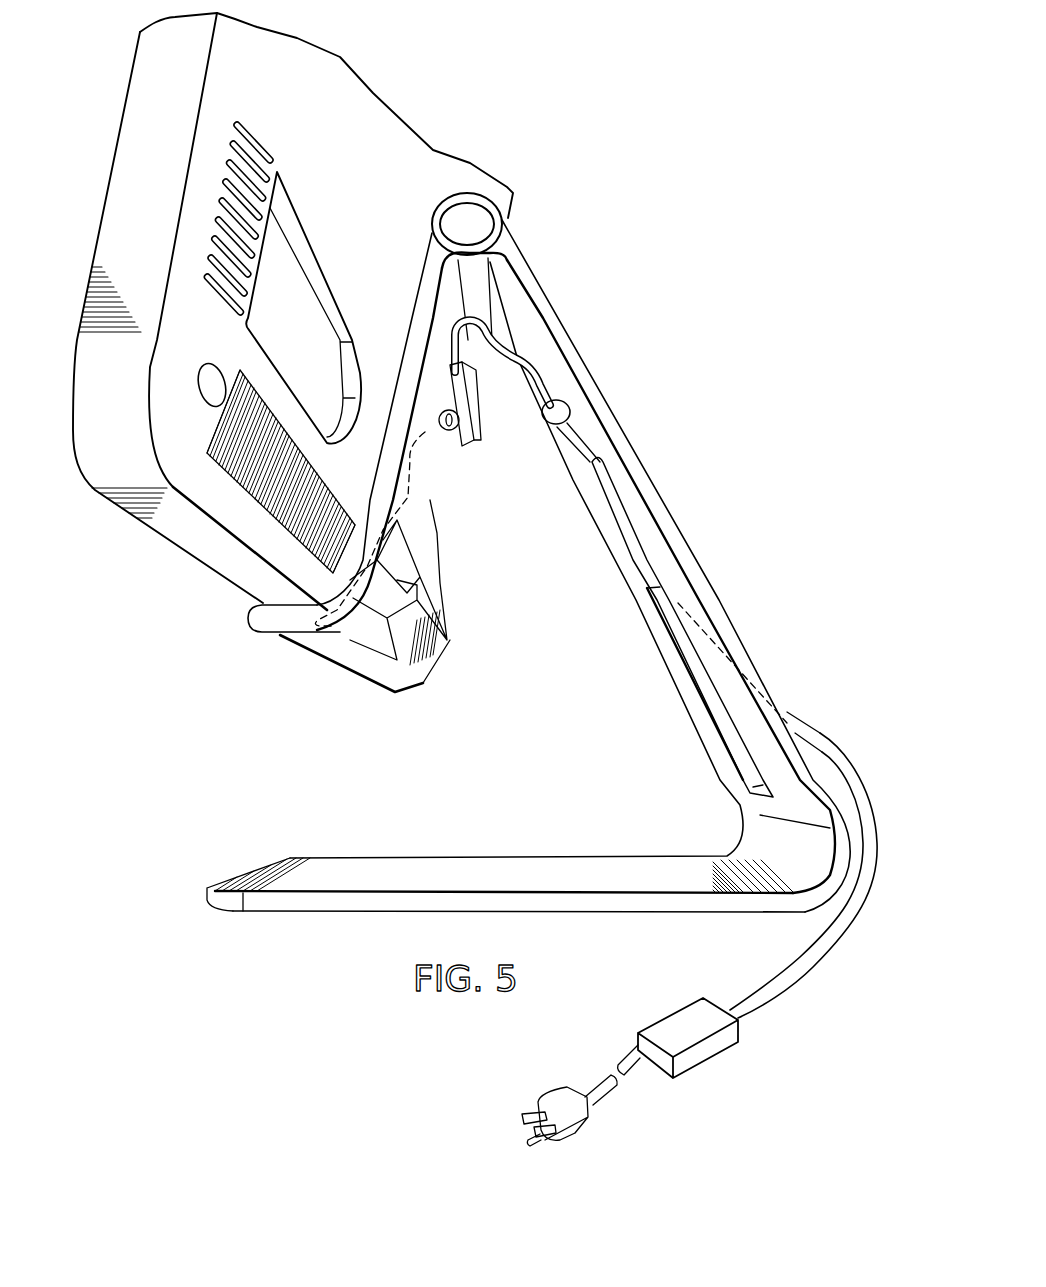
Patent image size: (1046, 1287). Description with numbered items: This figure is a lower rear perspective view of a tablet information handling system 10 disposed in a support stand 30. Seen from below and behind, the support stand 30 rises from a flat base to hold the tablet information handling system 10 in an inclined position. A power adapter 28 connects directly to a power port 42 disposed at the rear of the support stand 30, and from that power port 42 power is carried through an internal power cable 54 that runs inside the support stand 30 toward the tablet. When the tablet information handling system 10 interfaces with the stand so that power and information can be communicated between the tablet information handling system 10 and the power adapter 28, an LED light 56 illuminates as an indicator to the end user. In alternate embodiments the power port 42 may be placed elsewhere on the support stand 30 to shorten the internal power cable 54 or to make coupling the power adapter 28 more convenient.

The tablet information handling system 10 is at (114, 162).
The support stand 30 is at (678, 527).
The power adapter 28 is at (700, 1062).
The power port 42 is at (453, 450).
The internal power cable 54 is at (417, 493).
The LED light 56 is at (450, 413).